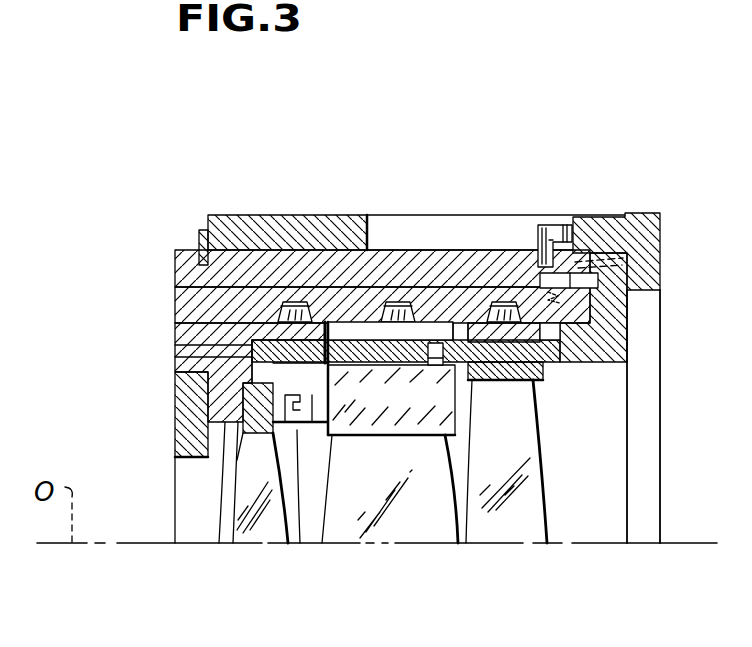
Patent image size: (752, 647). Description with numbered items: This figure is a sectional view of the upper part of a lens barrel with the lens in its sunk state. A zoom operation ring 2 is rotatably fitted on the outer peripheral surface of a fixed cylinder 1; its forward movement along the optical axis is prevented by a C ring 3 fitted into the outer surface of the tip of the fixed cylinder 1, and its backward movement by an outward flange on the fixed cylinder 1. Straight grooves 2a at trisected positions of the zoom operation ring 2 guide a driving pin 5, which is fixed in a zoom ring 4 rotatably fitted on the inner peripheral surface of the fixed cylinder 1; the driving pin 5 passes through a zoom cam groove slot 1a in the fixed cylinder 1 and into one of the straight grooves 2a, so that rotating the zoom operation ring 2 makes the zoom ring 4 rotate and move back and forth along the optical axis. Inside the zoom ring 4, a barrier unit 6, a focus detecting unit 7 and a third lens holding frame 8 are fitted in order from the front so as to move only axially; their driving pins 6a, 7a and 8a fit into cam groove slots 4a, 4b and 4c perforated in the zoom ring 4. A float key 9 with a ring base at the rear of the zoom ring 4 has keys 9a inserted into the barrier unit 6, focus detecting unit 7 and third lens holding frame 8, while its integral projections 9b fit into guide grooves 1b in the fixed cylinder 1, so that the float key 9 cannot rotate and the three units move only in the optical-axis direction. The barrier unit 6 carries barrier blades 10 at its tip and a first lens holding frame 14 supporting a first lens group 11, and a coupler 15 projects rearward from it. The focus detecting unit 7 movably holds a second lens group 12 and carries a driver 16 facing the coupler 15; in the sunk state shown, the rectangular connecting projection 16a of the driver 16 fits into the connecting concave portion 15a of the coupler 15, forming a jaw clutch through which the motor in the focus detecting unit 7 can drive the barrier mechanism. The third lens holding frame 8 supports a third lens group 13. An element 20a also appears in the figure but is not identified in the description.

The fixed cylinder 1 is at (247, 268).
The zoom cam groove slot 1a is at (648, 213).
The guide grooves 1b is at (447, 283).
The zoom operation ring 2 is at (222, 232).
The straight grooves 2a is at (418, 232).
The C ring 3 is at (199, 248).
The zoom ring 4 is at (192, 305).
The cam groove slot 4a is at (292, 303).
The cam groove slot 4b is at (400, 303).
The cam groove slot 4c is at (505, 303).
The driving pin 5 is at (563, 223).
The barrier unit 6 is at (245, 334).
The driving pin 6a is at (322, 332).
The focus detecting unit 7 is at (432, 403).
The driving pin 7a is at (435, 345).
The third lens holding frame 8 is at (543, 371).
The driving pin 8a is at (523, 300).
The float key 9 is at (608, 343).
The keys 9a is at (175, 345).
The integral projections 9b is at (605, 278).
The barrier blades 10 is at (182, 412).
The first lens group 11 is at (253, 523).
The second lens group 12 is at (437, 518).
The third lens group 13 is at (527, 520).
The first lens holding frame 14 is at (218, 542).
The coupler 15 is at (295, 364).
The connecting concave portion 15a is at (297, 543).
The driver 16 is at (335, 322).
The connecting projection 16a is at (313, 543).
The washer 20a is at (480, 335).